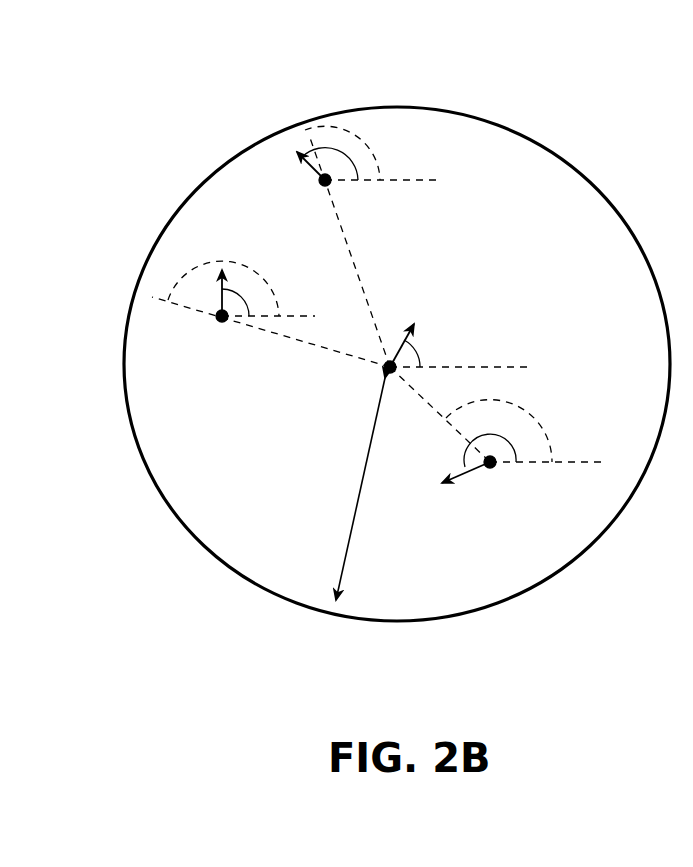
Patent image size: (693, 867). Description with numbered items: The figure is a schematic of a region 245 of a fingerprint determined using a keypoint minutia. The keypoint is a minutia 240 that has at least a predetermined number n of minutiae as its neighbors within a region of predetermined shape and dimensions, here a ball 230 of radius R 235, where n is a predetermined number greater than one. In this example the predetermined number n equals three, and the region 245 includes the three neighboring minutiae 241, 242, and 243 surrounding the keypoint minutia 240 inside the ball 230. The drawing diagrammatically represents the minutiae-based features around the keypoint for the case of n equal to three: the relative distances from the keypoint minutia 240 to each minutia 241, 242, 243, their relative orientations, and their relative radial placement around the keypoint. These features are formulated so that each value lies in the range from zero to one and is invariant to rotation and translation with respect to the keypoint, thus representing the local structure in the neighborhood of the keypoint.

The ball 230 is at (556, 152).
The radius R 235 is at (349, 541).
The keypoint minutia 240 is at (390, 366).
The minutia 241 is at (490, 462).
The minutia 242 is at (222, 318).
The minutia 243 is at (338, 208).
The region 245 is at (122, 144).